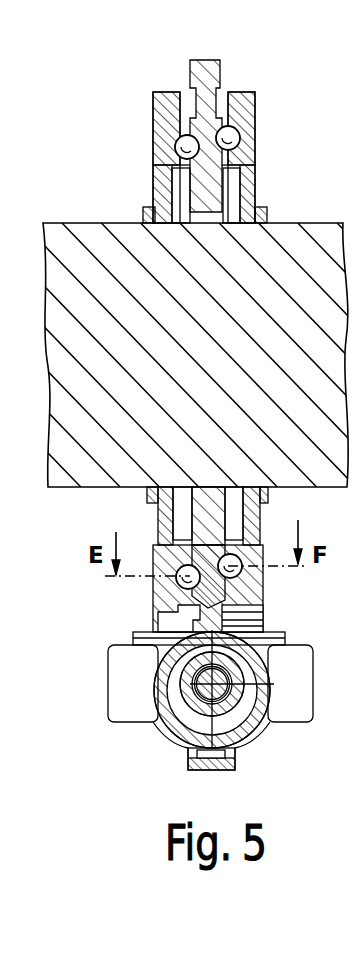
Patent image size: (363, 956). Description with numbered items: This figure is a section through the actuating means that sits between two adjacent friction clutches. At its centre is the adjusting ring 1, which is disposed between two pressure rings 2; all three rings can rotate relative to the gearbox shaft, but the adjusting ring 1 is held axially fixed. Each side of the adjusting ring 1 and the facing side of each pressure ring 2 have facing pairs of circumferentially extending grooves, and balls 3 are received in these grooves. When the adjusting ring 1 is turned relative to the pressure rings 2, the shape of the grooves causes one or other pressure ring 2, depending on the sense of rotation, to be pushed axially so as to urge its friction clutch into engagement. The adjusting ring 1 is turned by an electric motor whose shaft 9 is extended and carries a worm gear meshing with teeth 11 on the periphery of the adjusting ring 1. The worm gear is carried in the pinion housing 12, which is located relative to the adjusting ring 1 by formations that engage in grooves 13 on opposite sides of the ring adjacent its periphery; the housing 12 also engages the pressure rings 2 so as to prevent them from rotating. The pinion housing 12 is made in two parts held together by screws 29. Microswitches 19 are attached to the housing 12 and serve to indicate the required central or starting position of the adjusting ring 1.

The adjusting ring 1 is at (200, 178).
The pressure rings 2 is at (158, 110).
The balls 3 is at (216, 134).
The shaft of the electric motor 9 is at (212, 684).
The teeth 11 is at (160, 627).
The pinion housing 12 is at (133, 639).
The grooves 13 is at (264, 615).
The microswitches 19 is at (132, 708).
The screws 29 is at (235, 760).